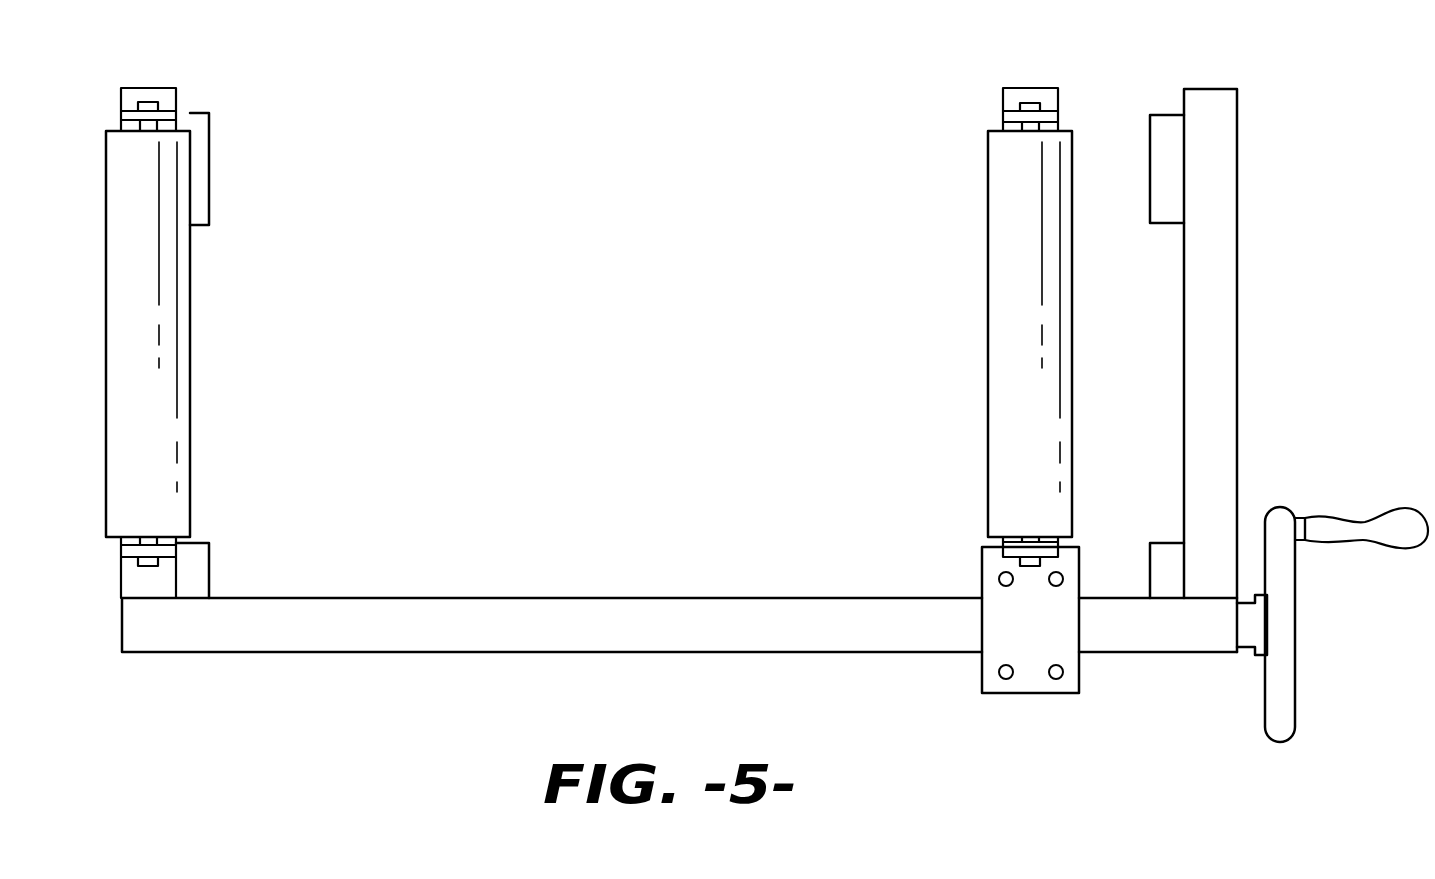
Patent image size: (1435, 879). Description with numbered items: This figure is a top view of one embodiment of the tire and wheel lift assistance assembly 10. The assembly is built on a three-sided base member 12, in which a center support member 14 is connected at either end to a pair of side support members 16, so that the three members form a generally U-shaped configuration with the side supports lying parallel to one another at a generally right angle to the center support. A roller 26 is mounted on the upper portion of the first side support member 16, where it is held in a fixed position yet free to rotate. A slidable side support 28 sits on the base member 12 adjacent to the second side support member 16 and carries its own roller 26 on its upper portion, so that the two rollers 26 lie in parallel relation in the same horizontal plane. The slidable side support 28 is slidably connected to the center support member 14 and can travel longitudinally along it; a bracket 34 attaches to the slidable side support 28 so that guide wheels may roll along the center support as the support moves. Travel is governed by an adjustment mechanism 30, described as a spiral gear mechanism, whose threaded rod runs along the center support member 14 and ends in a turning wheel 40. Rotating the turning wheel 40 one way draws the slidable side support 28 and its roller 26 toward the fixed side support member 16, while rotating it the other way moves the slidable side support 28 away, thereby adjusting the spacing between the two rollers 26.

The tire and wheel lift assistance assembly 10 is at (767, 388).
The three-sided base member 12 is at (1220, 397).
The center support member 14 is at (453, 617).
The side support member 16 is at (1212, 232).
The roller 26 is at (192, 340).
The slidable side support 28 is at (1037, 78).
The adjustment mechanism 30 is at (1247, 627).
The bracket 34 is at (1007, 629).
The turning wheel 40 is at (1283, 615).